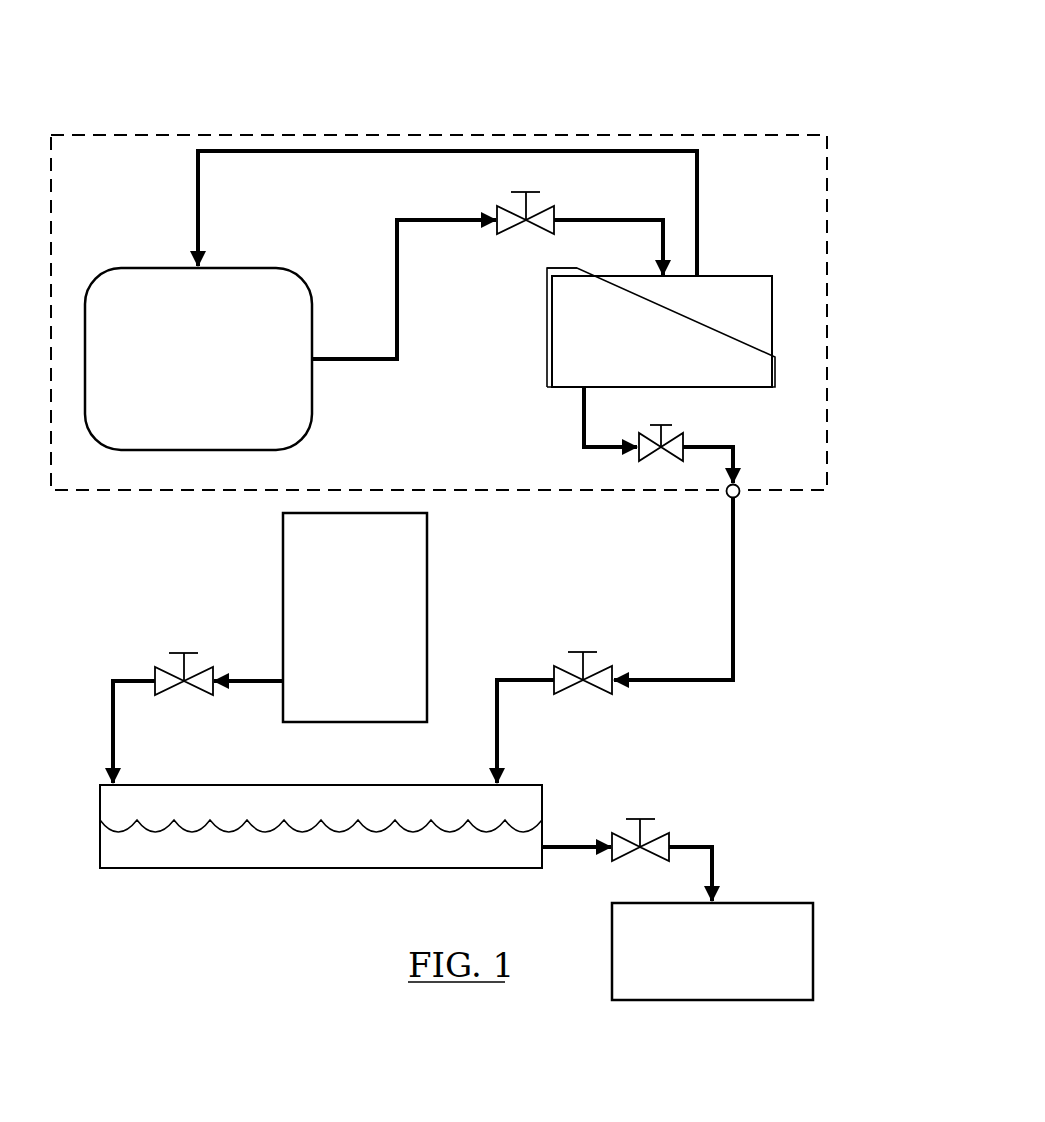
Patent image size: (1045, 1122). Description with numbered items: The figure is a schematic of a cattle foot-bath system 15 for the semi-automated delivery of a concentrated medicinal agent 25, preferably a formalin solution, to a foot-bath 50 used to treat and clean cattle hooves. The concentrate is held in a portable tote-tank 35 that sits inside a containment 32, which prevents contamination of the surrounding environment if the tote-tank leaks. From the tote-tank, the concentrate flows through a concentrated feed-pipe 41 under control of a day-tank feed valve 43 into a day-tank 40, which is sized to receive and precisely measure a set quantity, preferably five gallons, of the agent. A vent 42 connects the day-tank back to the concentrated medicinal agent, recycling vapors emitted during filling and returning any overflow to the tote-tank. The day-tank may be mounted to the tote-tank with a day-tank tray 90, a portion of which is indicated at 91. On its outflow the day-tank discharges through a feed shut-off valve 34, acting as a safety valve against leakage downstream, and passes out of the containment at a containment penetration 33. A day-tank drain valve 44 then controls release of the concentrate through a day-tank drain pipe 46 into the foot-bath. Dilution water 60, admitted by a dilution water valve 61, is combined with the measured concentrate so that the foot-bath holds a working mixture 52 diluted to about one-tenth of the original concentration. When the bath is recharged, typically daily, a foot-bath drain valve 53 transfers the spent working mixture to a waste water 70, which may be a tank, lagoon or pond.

The cattle foot-bath system 15 is at (658, 86).
The concentrated medicinal agent 25 is at (217, 359).
The containment 32 is at (426, 480).
The containment penetration 33 is at (740, 494).
The feed shut-off valve 34 is at (682, 438).
The tote-tank 35 is at (310, 318).
The day-tank 40 is at (636, 320).
The concentrated feed-pipe 41 is at (397, 345).
The vent 42 is at (697, 227).
The day-tank feed valve 43 is at (497, 215).
The day-tank drain valve 44 is at (556, 668).
The day-tank drain pipe 46 is at (733, 608).
The foot-bath 50 is at (321, 852).
The working mixture 52 is at (220, 858).
The foot-bath drain valve 53 is at (665, 838).
The dilution water 60 is at (343, 651).
The dilution water valve 61 is at (212, 672).
The waste water 70 is at (700, 975).
The day-tank tray 90 is at (547, 362).
The liner lip 91 is at (528, 246).